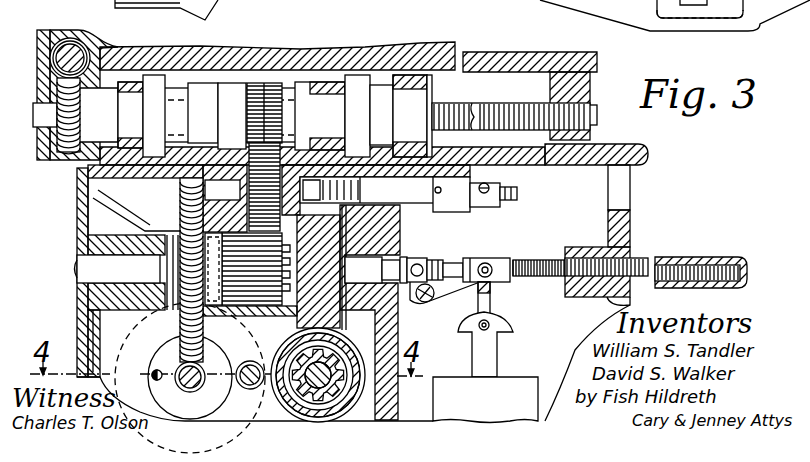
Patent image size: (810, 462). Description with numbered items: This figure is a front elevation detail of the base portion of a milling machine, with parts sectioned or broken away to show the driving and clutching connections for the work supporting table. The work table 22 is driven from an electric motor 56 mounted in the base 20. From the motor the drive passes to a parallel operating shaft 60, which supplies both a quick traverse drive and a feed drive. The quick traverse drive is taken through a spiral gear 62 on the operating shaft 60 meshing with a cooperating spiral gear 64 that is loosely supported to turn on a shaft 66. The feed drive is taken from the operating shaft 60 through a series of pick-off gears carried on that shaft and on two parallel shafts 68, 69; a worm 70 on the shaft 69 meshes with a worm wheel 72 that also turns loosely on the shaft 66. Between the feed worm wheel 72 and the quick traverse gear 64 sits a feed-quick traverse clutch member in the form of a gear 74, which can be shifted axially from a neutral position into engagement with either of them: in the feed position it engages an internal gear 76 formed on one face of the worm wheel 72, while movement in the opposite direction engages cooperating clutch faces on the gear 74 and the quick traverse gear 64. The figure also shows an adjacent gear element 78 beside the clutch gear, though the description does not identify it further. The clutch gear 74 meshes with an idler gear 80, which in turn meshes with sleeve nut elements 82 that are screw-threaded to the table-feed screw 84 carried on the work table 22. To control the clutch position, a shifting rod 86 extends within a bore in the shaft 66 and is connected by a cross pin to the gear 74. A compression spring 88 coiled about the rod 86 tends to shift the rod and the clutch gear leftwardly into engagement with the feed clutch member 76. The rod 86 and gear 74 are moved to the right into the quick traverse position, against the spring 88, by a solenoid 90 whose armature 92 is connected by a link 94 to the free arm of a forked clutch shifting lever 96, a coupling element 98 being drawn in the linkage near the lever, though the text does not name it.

The base 20 is at (648, 157).
The work table 22 is at (402, 56).
The electric motor 56 is at (97, 320).
The operating shaft 60 is at (337, 377).
The spiral gear 62 is at (343, 322).
The spiral gear 64 is at (309, 225).
The shaft 66 is at (90, 265).
The parallel shaft 68 is at (243, 383).
The parallel shaft 69 is at (155, 371).
The worm 70 is at (181, 366).
The worm wheel 72 is at (183, 193).
The feed-quick traverse clutch gear 74 is at (151, 224).
The internal gear 76 is at (212, 303).
The gear 78 is at (248, 304).
The idler gear 80 is at (250, 187).
The sleeve nut elements 82 is at (290, 74).
The table-feed screw 84 is at (450, 108).
The shifting rod 86 is at (545, 250).
The compression spring 88 is at (640, 262).
The solenoid 90 is at (515, 407).
The armature 92 is at (497, 350).
The link 94 is at (490, 301).
The forked clutch shifting lever 96 is at (453, 292).
The universal joint 98 is at (421, 262).